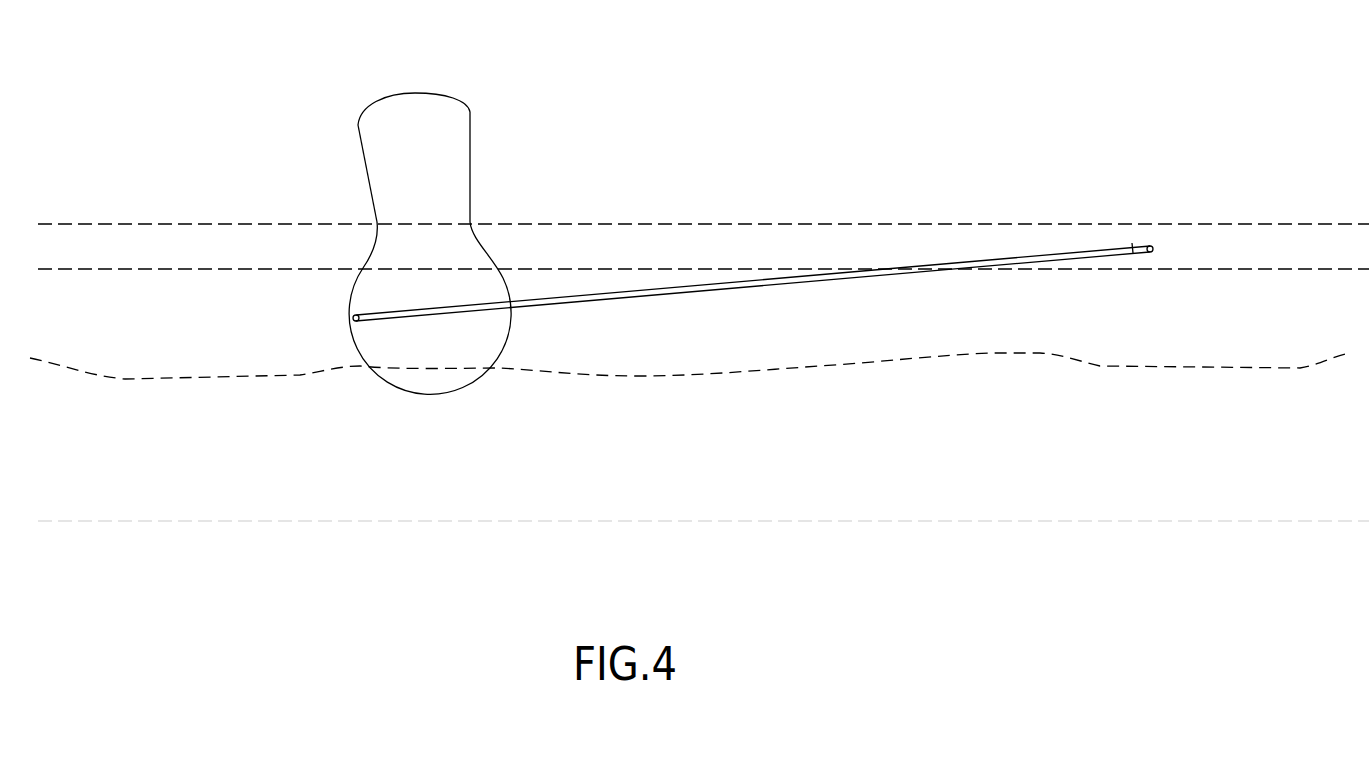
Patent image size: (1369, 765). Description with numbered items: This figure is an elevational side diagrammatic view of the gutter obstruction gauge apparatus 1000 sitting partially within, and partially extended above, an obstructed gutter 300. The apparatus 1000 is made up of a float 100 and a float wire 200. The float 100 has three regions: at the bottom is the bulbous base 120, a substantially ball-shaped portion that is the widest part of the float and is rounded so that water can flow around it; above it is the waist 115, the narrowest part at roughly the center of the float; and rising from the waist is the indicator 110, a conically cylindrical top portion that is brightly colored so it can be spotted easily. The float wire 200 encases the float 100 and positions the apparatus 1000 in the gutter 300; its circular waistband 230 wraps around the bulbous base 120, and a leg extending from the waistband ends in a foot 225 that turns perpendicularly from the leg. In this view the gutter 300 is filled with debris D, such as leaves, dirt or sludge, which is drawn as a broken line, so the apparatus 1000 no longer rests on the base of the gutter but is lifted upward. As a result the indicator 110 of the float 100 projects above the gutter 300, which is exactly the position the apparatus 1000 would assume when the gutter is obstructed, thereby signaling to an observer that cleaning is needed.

The float 100 is at (444, 243).
The indicator 110 is at (362, 159).
The waist 115 is at (372, 243).
The bulbous base 120 is at (509, 338).
The float wire 200 is at (757, 271).
The foot 225 is at (1155, 248).
The waistband 230 is at (352, 319).
The gutter 300 is at (914, 220).
The gutter obstruction gauge apparatus (GOGA) 1000 is at (637, 216).
The debris D is at (1087, 362).